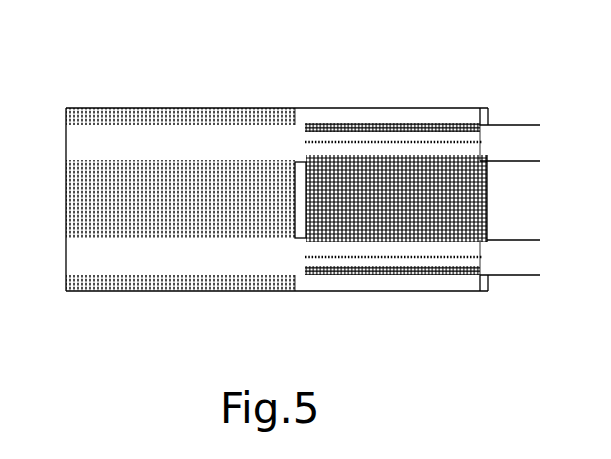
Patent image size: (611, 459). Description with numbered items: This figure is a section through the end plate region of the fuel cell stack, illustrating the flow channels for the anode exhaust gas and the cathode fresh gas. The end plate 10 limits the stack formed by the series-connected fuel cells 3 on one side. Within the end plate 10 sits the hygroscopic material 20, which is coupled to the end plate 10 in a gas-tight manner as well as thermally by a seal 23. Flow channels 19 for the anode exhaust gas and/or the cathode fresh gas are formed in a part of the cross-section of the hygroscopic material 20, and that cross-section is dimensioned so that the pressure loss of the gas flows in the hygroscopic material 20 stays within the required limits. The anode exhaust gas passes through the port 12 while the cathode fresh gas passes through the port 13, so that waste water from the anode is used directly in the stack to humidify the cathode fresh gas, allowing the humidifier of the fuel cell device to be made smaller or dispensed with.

The fuel cell 3 is at (168, 108).
The end plate 10 is at (338, 115).
The flow channel 19 is at (423, 136).
The hygroscopic material 20 is at (445, 195).
The seal 23 is at (302, 240).
The port for the anode exhaust gas 12 is at (503, 142).
The port for the cathode fresh gas 13 is at (508, 260).